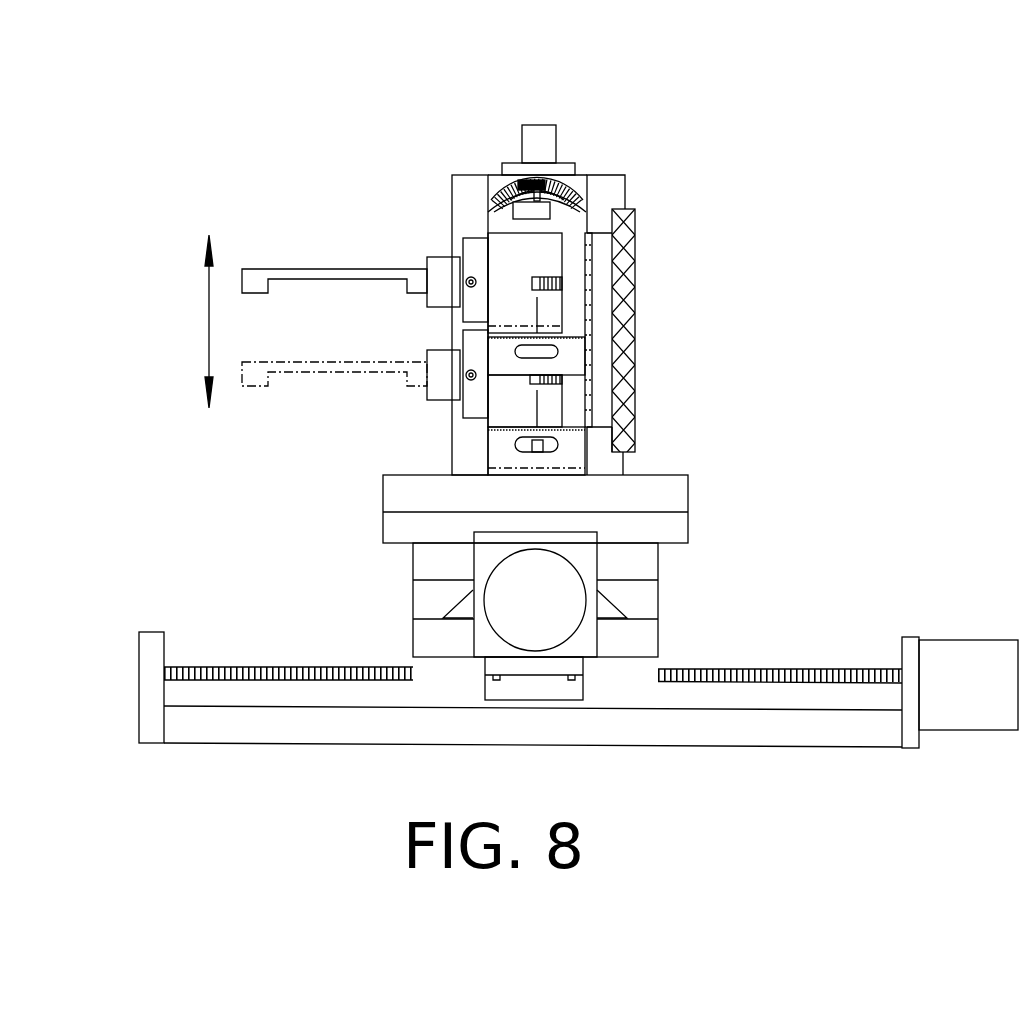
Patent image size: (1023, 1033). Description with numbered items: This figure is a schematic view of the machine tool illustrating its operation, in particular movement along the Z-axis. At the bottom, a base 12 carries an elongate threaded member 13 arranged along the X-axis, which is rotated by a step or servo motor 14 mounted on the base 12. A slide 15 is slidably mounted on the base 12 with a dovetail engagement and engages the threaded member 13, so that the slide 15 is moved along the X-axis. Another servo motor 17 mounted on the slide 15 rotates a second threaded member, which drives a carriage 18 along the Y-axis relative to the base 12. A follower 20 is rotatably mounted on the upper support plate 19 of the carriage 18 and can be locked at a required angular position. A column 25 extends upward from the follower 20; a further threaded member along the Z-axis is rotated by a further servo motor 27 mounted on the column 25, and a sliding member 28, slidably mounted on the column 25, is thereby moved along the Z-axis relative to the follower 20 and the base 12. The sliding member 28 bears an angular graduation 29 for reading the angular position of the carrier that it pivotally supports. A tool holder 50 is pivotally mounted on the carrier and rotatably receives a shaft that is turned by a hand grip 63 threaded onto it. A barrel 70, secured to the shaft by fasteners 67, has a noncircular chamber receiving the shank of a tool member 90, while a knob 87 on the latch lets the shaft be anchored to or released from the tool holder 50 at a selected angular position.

The base 12 is at (857, 737).
The threaded member 13 is at (845, 673).
The servo motor 14 is at (977, 670).
The slide 15 is at (444, 647).
The servo motor 17 is at (520, 603).
The carriage 18 is at (647, 565).
The upper support plate 19 is at (387, 533).
The follower 20 is at (682, 498).
The column 25 is at (457, 202).
The servo motor 27 is at (538, 138).
The sliding member 28 is at (583, 187).
The angular graduation 29 is at (502, 178).
The tool holder 50 is at (578, 218).
The hand grip 63 is at (633, 255).
The fasteners 67 is at (467, 279).
The barrel 70 is at (442, 380).
The knob 87 is at (530, 180).
The tool member 90 is at (278, 273).